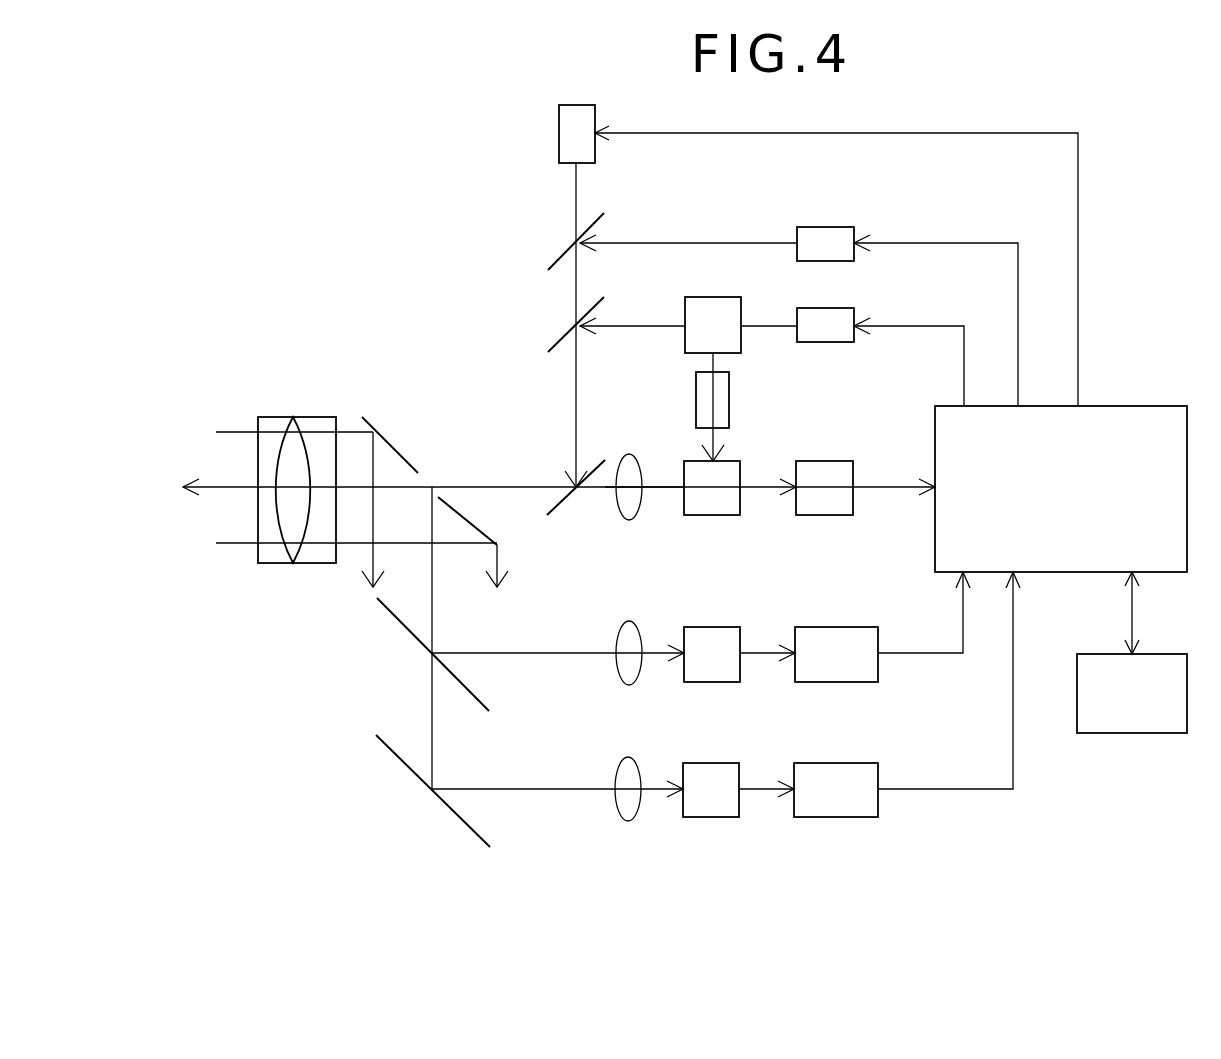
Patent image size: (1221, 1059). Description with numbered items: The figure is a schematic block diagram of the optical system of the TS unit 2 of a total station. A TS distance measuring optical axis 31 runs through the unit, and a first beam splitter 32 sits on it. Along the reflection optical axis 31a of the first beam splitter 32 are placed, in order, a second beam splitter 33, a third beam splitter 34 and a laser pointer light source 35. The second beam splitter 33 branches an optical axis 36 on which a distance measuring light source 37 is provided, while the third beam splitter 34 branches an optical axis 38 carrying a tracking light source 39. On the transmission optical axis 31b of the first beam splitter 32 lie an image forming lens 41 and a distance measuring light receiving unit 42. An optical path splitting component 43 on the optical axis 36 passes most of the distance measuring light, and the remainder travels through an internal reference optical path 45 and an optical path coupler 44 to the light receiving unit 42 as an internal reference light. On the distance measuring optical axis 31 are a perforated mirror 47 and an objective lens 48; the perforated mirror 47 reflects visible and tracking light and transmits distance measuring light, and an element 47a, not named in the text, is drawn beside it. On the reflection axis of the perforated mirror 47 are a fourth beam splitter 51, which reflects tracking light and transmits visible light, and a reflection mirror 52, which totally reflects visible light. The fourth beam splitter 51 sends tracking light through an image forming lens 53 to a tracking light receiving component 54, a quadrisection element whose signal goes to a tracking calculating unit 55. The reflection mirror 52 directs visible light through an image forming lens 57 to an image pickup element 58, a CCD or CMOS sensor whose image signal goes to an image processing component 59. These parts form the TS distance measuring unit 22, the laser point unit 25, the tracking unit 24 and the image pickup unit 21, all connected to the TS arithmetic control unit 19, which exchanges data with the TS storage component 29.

The TS unit 2 is at (1150, 141).
The TS arithmetic control unit 19 is at (1115, 406).
The image pickup unit 21 is at (726, 732).
The TS distance measuring unit 22 is at (774, 358).
The tracking unit 24 is at (725, 444).
The laser point unit 25 is at (510, 187).
The TS storage component 29 is at (1120, 733).
The TS distance measuring optical axis 31 is at (490, 485).
The reflection optical axis 31a is at (575, 287).
The transmission optical axis 31b is at (662, 494).
The first beam splitter 32 is at (560, 520).
The second beam splitter 33 is at (560, 340).
The third beam splitter 34 is at (556, 262).
The laser pointer light source 35 is at (559, 130).
The optical axis 36 is at (620, 326).
The distance measuring light source 37 is at (840, 342).
The optical axis 38 is at (668, 243).
The tracking light source 39 is at (838, 227).
The image forming lens 41 is at (637, 462).
The distance measuring light receiving unit 42 is at (825, 515).
The optical path splitting component 43 is at (705, 297).
The optical path coupler 44 is at (720, 515).
The internal reference optical path 45 is at (729, 400).
The perforated mirror 47 is at (368, 417).
The deflecting mirror 47a is at (425, 478).
The objective lens 48 is at (305, 417).
The fourth beam splitter 51 is at (400, 628).
The reflection mirror 52 is at (400, 760).
The image forming lens 53 is at (620, 632).
The tracking light receiving component 54 is at (715, 627).
The tracking calculating unit 55 is at (840, 627).
The image forming lens 57 is at (615, 765).
The image pickup element 58 is at (718, 763).
The image processing component 59 is at (860, 763).